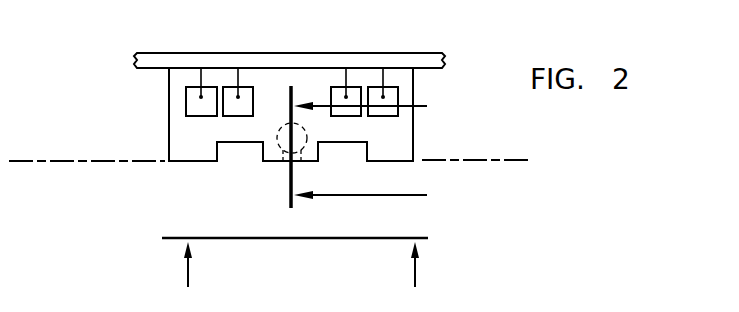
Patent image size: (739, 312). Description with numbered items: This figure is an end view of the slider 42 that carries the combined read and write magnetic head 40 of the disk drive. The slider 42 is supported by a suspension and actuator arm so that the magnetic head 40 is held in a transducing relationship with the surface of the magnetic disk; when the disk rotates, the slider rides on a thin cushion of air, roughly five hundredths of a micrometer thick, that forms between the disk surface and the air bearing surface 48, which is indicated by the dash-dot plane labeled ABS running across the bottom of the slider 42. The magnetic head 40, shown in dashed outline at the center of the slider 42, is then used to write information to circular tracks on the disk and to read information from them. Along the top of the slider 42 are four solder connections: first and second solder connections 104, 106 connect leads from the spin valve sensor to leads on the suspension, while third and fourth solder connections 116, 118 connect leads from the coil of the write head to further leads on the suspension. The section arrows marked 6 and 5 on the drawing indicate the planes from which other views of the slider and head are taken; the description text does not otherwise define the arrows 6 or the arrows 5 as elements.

The first solder connection 104 is at (186, 97).
The third solder connection 116 is at (223, 97).
The fourth solder connection 118 is at (331, 97).
The second solder connection 106 is at (368, 97).
The slider 42 is at (168, 103).
The magnetic head 40 is at (282, 143).
The air bearing surface 48 is at (58, 163).
The section line 6- 6 is at (374, 152).
The section line 5- 5 is at (295, 275).